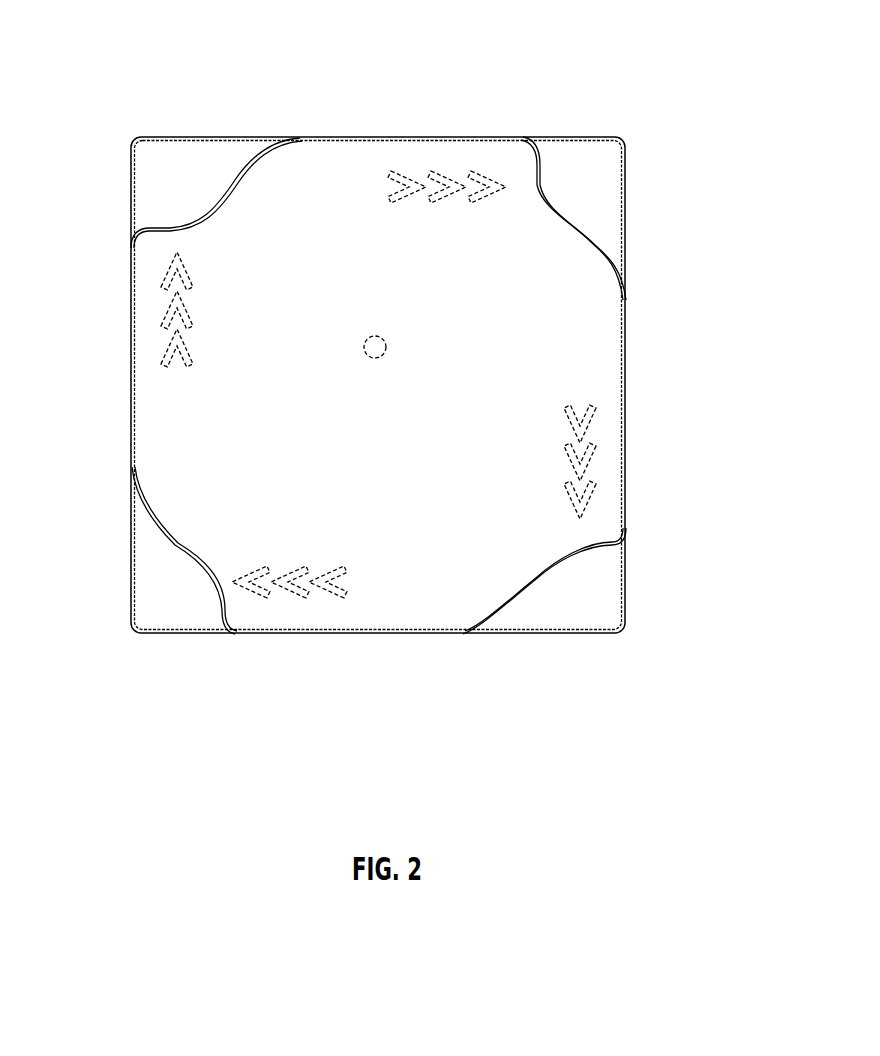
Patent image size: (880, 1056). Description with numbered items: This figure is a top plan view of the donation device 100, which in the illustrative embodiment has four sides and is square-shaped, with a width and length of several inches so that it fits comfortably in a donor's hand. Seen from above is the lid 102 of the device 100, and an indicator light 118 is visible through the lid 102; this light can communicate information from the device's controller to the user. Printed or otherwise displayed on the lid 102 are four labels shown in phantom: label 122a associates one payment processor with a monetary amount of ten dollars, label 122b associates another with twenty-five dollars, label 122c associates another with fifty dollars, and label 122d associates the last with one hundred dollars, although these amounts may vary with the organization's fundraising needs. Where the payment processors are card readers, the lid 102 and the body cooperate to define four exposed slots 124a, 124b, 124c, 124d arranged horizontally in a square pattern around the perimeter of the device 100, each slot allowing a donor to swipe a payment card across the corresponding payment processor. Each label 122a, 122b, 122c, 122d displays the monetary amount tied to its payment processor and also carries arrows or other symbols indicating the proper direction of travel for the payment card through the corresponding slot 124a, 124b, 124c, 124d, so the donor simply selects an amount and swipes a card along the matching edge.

The donation device 100 is at (607, 77).
The lid 102 is at (170, 162).
The indicator light 118 is at (368, 356).
The label 122a is at (160, 438).
The label 122b is at (315, 168).
The label 122c is at (600, 333).
The label 122d is at (442, 597).
The exposed slot 124a is at (102, 388).
The exposed slot 124b is at (395, 115).
The exposed slot 124c is at (643, 388).
The exposed slot 124d is at (331, 646).